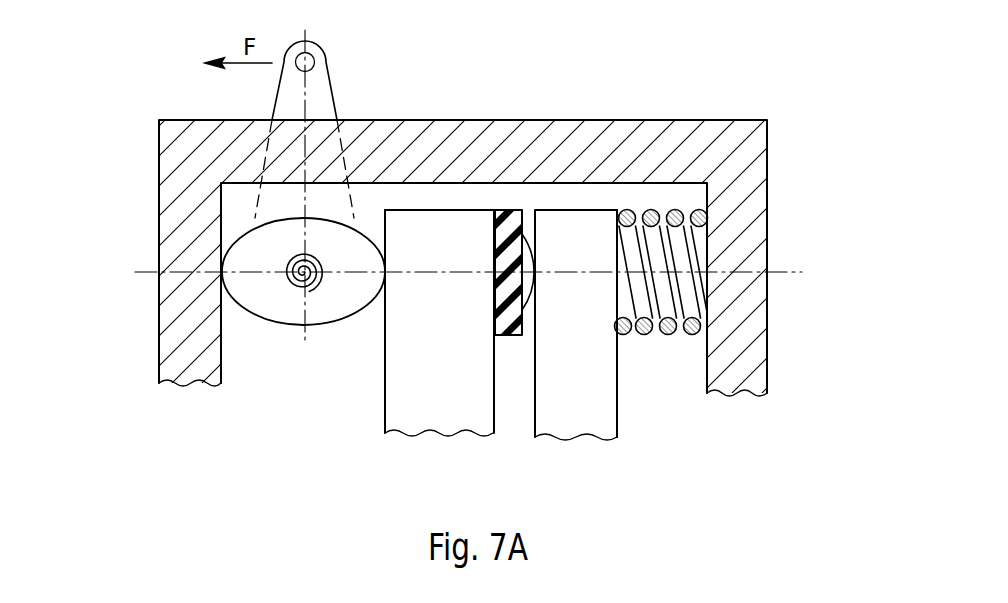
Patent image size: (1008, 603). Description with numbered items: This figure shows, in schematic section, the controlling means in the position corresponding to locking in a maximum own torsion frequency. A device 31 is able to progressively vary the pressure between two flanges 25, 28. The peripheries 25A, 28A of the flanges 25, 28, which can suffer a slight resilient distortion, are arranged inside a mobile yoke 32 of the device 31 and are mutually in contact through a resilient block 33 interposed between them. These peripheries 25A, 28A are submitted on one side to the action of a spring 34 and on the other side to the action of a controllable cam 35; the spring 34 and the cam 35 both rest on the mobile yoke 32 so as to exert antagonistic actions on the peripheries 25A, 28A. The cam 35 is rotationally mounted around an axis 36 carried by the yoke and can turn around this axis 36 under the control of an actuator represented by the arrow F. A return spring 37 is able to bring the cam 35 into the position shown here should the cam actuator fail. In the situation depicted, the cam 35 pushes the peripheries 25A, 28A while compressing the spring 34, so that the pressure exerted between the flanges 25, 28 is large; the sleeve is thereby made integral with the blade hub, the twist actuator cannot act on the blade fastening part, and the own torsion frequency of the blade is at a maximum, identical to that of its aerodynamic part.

The flange 25 is at (408, 382).
The periphery of flange 25A is at (418, 238).
The flange 28 is at (580, 417).
The periphery of flange 28A is at (585, 232).
The device 31 is at (620, 94).
The mobile yoke 32 is at (177, 217).
The resilient block 33 is at (508, 217).
The spring 34 is at (663, 258).
The controllable cam 35 is at (268, 296).
The axis 36 is at (296, 290).
The return spring 37 is at (314, 262).